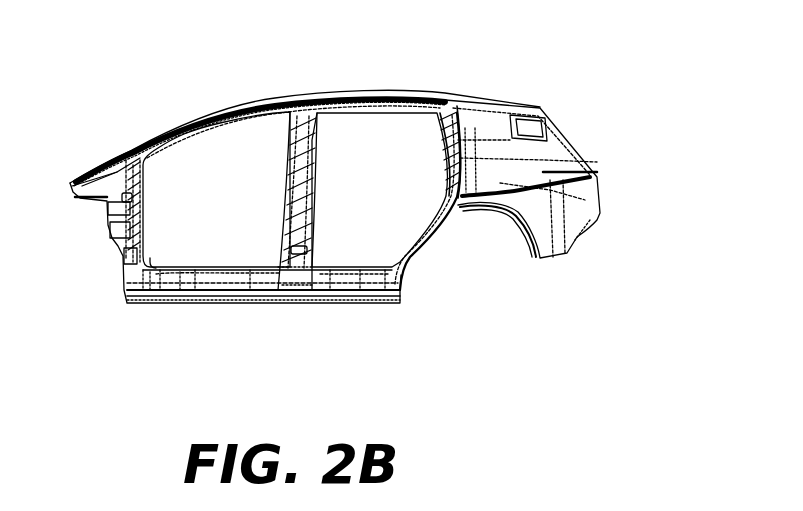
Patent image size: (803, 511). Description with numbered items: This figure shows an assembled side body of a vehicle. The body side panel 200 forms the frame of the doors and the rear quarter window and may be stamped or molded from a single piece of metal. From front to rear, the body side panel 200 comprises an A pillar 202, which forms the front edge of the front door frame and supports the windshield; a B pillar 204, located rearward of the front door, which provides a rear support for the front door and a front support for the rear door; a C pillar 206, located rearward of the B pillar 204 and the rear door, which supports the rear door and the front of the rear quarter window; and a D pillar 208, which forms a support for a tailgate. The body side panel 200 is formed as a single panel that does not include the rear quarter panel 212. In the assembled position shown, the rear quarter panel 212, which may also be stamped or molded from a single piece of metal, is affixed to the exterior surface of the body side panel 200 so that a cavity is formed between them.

The body side panel 200 is at (410, 247).
The A pillar 202 is at (127, 151).
The B pillar 204 is at (307, 188).
The C pillar 206 is at (450, 130).
The D pillar 208 is at (563, 130).
The rear quarter panel 212 is at (508, 162).